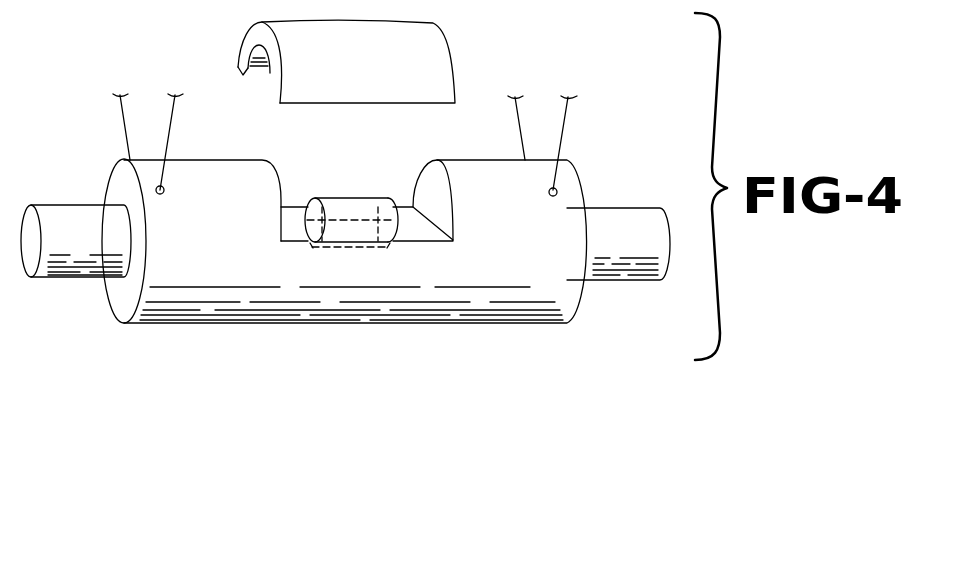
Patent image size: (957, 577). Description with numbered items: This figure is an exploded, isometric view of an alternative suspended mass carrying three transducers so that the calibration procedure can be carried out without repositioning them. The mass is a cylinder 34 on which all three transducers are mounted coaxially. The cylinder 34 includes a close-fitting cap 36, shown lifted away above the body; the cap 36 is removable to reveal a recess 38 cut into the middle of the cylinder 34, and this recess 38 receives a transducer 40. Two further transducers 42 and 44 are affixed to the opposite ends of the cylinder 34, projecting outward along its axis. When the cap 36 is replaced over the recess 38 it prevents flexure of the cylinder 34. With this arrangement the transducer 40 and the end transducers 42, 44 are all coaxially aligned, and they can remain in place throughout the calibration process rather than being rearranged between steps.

The cylinder 34 is at (527, 297).
The cap 36 is at (437, 43).
The recess 38 is at (358, 232).
The transducer 40 is at (354, 205).
The transducer 42 is at (88, 214).
The transducer 44 is at (648, 218).